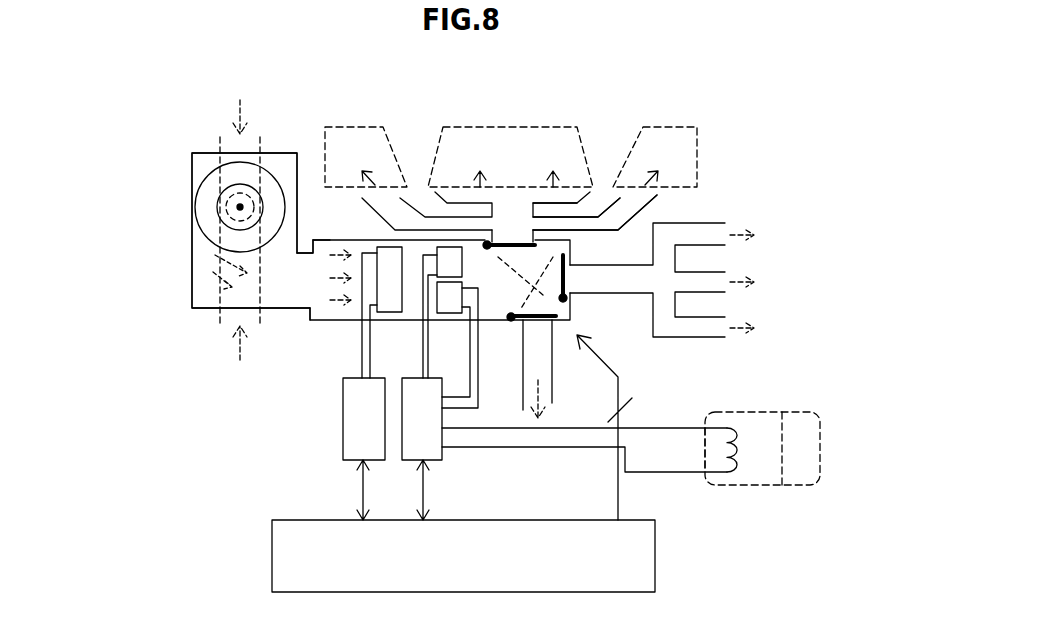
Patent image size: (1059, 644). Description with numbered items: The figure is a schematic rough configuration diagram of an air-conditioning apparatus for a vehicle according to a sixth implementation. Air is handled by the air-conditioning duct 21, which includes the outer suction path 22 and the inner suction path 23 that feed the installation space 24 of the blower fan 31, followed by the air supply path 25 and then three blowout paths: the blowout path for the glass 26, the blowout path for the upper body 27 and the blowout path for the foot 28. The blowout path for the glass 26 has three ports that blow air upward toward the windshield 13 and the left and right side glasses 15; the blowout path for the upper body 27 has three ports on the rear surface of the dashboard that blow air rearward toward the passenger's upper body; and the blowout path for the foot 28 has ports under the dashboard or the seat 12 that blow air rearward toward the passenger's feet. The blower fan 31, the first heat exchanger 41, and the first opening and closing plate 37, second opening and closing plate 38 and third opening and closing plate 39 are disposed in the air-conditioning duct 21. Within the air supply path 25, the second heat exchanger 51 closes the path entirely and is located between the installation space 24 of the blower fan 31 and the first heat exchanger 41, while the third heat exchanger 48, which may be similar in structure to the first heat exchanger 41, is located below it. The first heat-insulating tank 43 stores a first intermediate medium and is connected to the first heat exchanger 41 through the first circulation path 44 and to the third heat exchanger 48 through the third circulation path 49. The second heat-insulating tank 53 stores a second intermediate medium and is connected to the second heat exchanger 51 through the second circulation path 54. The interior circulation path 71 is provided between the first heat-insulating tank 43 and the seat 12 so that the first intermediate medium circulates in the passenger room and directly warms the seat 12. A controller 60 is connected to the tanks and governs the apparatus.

The seat 12 is at (765, 485).
The windshield 13 is at (547, 148).
The side glass 15 is at (355, 150).
The air-conditioning duct 21 is at (152, 238).
The outer suction path 22 is at (233, 140).
The inner suction path 23 is at (233, 330).
The installation space of the blower fan 24 is at (192, 270).
The air supply path 25 is at (328, 257).
The blowout path for the glass 26 is at (540, 233).
The blowout path for the upper body 27 is at (643, 297).
The blowout path for the foot 28 is at (558, 388).
The blower fan 31 is at (193, 203).
The first opening and closing plate 37 is at (517, 237).
The second opening and closing plate 38 is at (563, 270).
The third opening and closing plate 39 is at (532, 320).
The first heat exchanger 41 is at (448, 263).
The first heat-insulating tank 43 is at (442, 462).
The first circulation path 44 is at (423, 347).
The third heat exchanger 48 is at (453, 313).
The third circulation path 49 is at (479, 406).
The second heat exchanger 51 is at (390, 270).
The second heat-insulating tank 53 is at (343, 443).
The second circulation path 54 is at (362, 333).
The controller 60 is at (650, 518).
The interior circulation path 71 is at (733, 428).